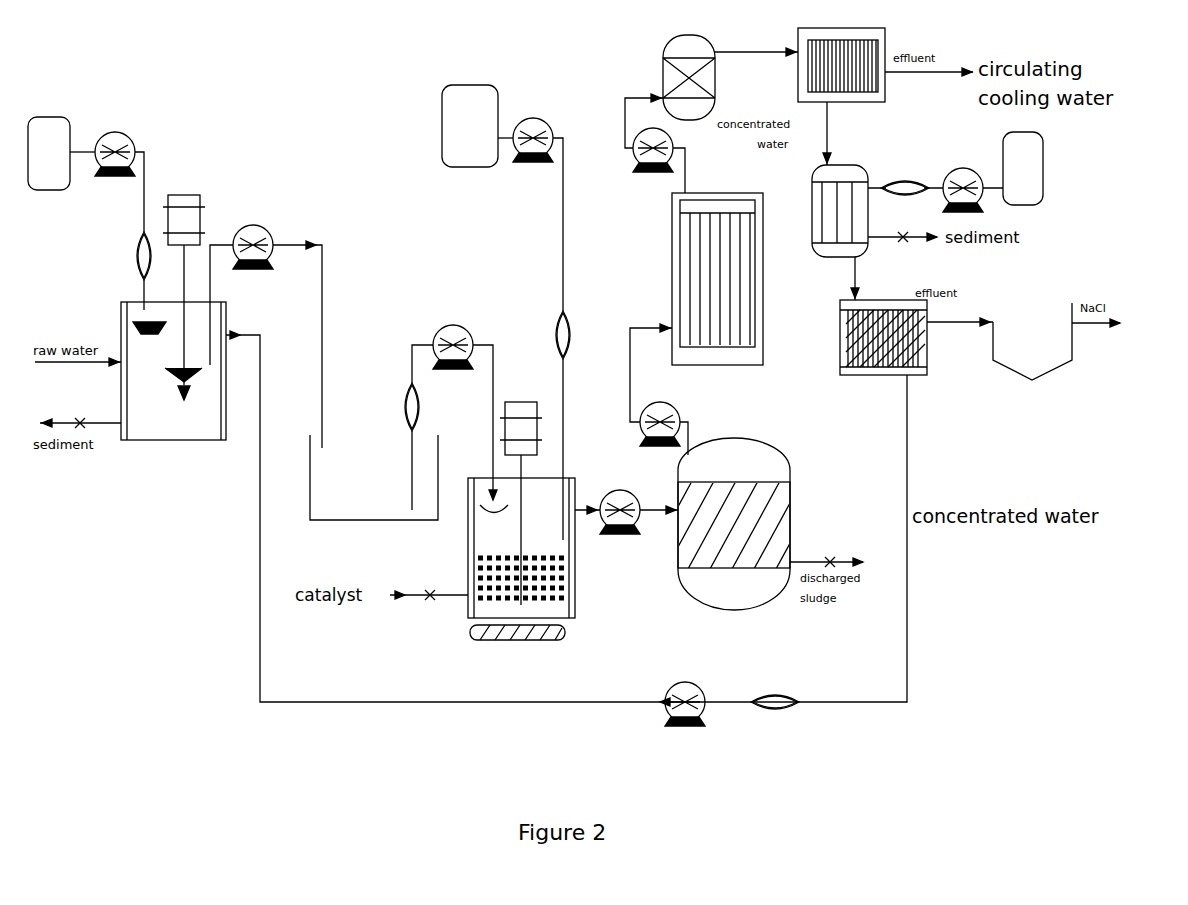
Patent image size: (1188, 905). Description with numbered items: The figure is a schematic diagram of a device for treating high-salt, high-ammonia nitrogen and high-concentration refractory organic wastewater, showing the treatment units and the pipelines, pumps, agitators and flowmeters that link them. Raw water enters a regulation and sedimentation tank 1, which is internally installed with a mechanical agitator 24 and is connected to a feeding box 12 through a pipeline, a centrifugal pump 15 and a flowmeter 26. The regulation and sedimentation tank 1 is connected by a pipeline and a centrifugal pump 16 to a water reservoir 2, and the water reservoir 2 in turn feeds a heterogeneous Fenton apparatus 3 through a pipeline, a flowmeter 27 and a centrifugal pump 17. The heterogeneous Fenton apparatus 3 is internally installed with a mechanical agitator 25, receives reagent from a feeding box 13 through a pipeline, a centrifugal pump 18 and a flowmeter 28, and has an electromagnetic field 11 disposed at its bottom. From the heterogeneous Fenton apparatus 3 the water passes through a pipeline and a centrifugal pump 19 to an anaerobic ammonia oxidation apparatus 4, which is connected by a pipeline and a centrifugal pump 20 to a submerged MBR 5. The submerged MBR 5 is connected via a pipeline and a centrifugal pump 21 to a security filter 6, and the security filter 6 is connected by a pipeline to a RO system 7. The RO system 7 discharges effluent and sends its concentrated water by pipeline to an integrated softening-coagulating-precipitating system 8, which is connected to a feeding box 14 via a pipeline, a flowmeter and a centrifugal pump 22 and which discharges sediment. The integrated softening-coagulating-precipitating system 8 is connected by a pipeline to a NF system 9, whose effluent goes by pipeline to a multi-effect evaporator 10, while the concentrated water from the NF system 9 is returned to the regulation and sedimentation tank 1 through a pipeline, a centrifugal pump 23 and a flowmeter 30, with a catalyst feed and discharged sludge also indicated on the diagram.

The regulation and sedimentation tank 1 is at (173, 384).
The water reservoir 2 is at (374, 477).
The heterogeneous Fenton apparatus 3 is at (511, 548).
The anaerobic ammonia oxidation apparatus 4 is at (734, 537).
The submerged MBR 5 is at (707, 279).
The security filter 6 is at (680, 77).
The RO system 7 is at (834, 65).
The integrated softening-coagulating-precipitating system 8 is at (829, 211).
The NF system 9 is at (883, 350).
The multi-effect evaporator 10 is at (1056, 356).
The electromagnetic field 11 is at (519, 644).
The feeding box 12 is at (49, 140).
The feeding box 13 is at (470, 139).
The feeding box 14 is at (1035, 168).
The centrifugal pump 15 is at (115, 140).
The centrifugal pump 16 is at (253, 235).
The centrifugal pump 17 is at (685, 694).
The centrifugal pump 18 is at (533, 126).
The centrifugal pump 19 is at (620, 501).
The centrifugal pump 20 is at (660, 411).
The centrifugal pump 21 is at (648, 165).
The centrifugal pump 22 is at (963, 178).
The centrifugal pump 23 is at (905, 170).
The mechanical agitator 24 is at (184, 276).
The mechanical agitator 25 is at (521, 491).
The flowmeter 26 is at (124, 256).
The flowmeter 27 is at (393, 407).
The flowmeter 28 is at (576, 335).
The flowmeter 30 is at (775, 686).